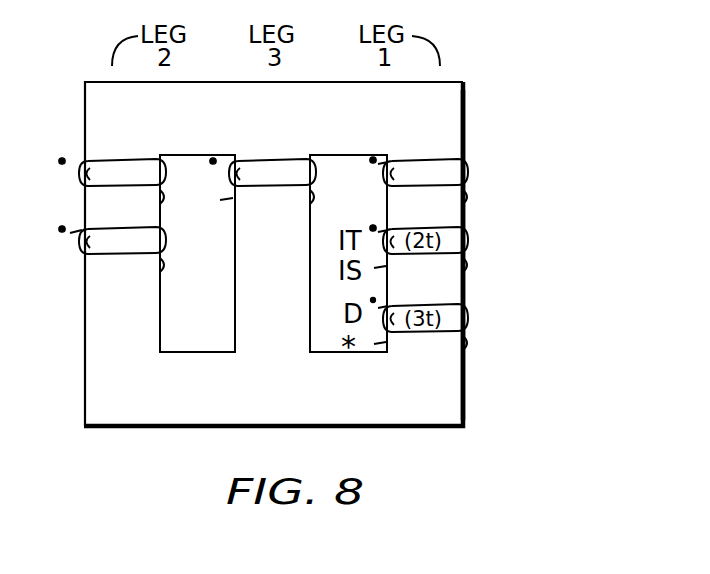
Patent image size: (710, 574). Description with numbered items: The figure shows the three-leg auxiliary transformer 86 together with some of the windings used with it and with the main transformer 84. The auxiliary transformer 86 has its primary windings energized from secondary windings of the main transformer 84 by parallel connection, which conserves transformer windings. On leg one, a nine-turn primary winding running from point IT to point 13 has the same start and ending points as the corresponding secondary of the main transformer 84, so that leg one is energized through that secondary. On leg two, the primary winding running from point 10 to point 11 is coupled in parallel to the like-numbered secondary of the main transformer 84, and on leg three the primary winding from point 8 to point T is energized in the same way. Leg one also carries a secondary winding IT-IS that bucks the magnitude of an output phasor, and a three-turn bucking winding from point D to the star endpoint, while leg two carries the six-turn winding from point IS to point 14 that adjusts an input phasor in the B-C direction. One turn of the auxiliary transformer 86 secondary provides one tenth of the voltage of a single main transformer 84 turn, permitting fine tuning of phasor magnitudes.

The main transformer 84 is at (233, 220).
The auxiliary transformer 86 is at (535, 140).
The winding endpoint 10 is at (82, 162).
The winding endpoint 11 is at (84, 198).
The winding endpoint 14 is at (84, 266).
The winding endpoint 8 is at (232, 162).
The winding endpoint 13 is at (386, 198).